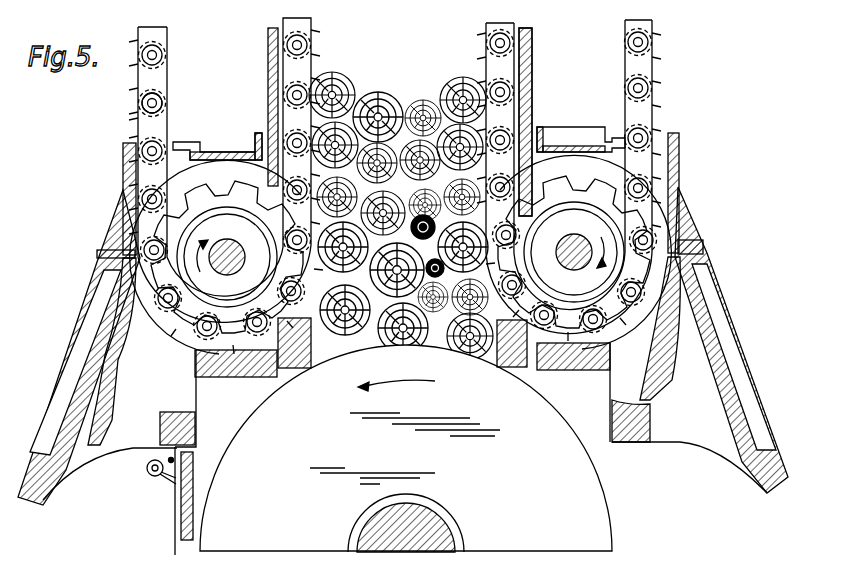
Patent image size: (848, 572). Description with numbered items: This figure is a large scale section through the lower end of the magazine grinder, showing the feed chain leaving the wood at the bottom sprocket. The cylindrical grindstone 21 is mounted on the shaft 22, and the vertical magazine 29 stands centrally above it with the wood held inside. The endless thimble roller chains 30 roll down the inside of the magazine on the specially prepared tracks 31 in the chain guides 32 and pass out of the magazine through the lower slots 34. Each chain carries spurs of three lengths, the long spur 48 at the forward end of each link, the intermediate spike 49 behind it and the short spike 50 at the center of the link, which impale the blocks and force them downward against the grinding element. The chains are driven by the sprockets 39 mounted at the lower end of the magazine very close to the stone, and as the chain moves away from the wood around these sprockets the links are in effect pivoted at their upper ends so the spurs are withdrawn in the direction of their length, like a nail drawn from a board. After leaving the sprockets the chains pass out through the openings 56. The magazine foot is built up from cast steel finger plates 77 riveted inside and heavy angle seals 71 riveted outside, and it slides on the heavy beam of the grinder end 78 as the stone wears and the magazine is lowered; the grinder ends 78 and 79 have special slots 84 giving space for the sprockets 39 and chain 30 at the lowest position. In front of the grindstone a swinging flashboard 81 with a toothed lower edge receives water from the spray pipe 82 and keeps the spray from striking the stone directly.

The grindstone 21 is at (406, 311).
The shaft 22 is at (454, 541).
The magazine 29 is at (268, 48).
The feed chains 30 is at (305, 27).
The tracks 31 is at (514, 27).
The chain guides 32 is at (530, 28).
The slots 34 is at (258, 190).
The sprockets 39 is at (220, 190).
The long spur 48 is at (138, 106).
The intermediate spike 49 is at (138, 90).
The short spike 50 is at (138, 121).
The openings 56 is at (124, 146).
The angle seals 71 is at (216, 380).
The finger plates 77 is at (303, 365).
The grinder end 78 is at (62, 394).
The grinder end 79 is at (651, 420).
The flashboard 81 is at (180, 520).
The spray pipe 82 is at (147, 473).
The slots 84 is at (145, 345).